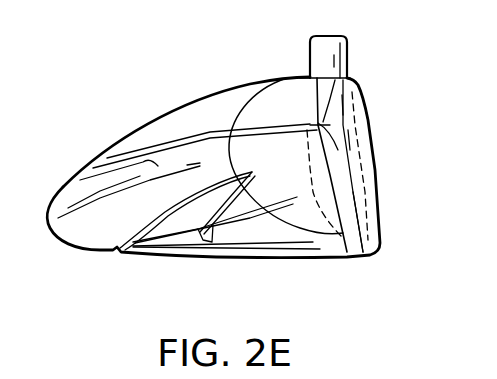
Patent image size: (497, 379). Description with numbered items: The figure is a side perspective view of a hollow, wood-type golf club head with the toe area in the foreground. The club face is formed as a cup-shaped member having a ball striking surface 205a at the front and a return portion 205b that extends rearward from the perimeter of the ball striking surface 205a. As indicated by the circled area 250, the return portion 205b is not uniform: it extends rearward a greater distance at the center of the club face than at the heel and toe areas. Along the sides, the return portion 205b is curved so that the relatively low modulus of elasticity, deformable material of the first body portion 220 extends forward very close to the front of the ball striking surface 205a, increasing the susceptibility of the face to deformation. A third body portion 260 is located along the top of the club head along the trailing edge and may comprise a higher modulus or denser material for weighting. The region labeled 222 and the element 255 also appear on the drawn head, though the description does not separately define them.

The circled area 250 is at (388, 191).
The first body portion 220 is at (290, 92).
The crown ridge 222 is at (244, 105).
The third body portion 260 is at (77, 195).
The striking face 255 is at (340, 175).
The ball striking surface 205a is at (355, 103).
The return portion 205b is at (363, 238).